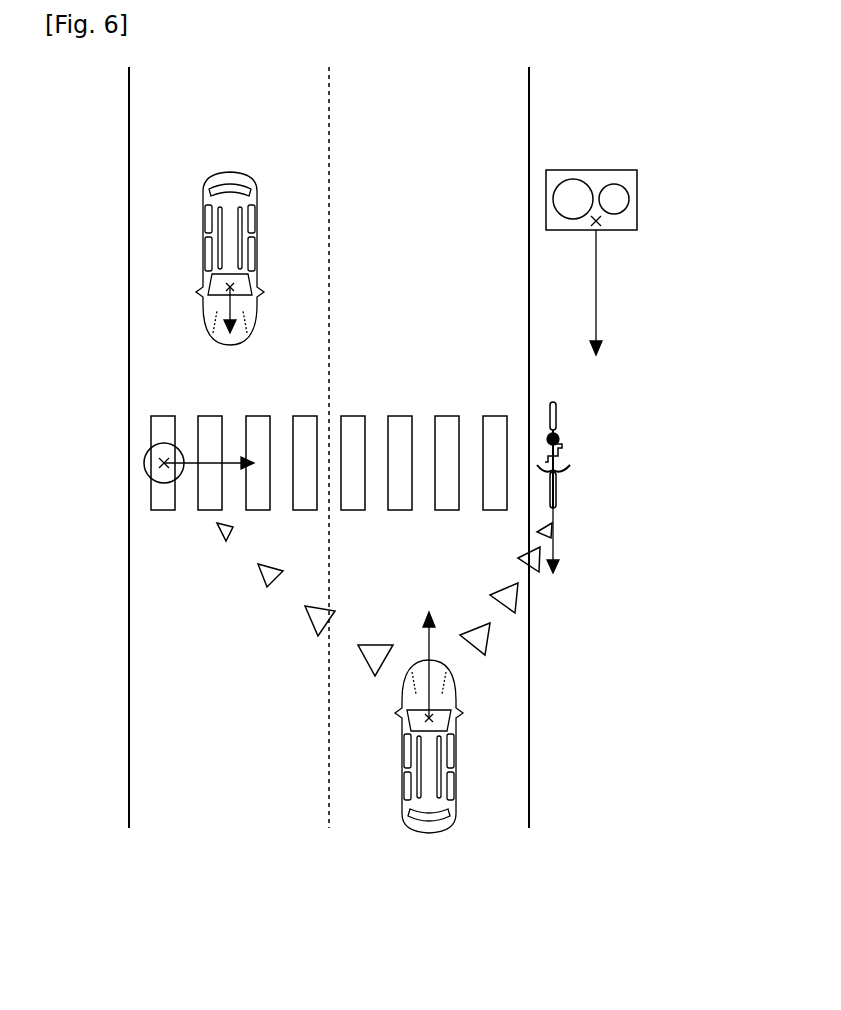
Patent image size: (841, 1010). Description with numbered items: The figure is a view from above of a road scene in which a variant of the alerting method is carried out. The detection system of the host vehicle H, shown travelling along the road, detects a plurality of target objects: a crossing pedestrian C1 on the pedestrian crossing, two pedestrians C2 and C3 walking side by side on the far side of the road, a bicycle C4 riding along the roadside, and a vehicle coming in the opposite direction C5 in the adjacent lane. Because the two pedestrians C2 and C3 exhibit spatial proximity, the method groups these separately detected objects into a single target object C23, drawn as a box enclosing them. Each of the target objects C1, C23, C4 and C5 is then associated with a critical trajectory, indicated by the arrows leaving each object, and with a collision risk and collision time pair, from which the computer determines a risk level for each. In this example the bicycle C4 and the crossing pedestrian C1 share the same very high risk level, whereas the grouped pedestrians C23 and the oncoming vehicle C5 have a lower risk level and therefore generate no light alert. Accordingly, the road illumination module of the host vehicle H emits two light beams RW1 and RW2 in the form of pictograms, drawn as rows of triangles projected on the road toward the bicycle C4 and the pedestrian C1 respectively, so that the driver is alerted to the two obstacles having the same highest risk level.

The crossing pedestrian C1 is at (145, 462).
The pedestrian C2 is at (573, 197).
The pedestrian C3 is at (620, 201).
The single target object C23 is at (628, 170).
The bicycle C4 is at (570, 467).
The vehicle coming in the opposite direction C5 is at (197, 223).
The light beam RW1 is at (513, 600).
The light beam RW2 is at (260, 573).
The host vehicle H is at (445, 767).